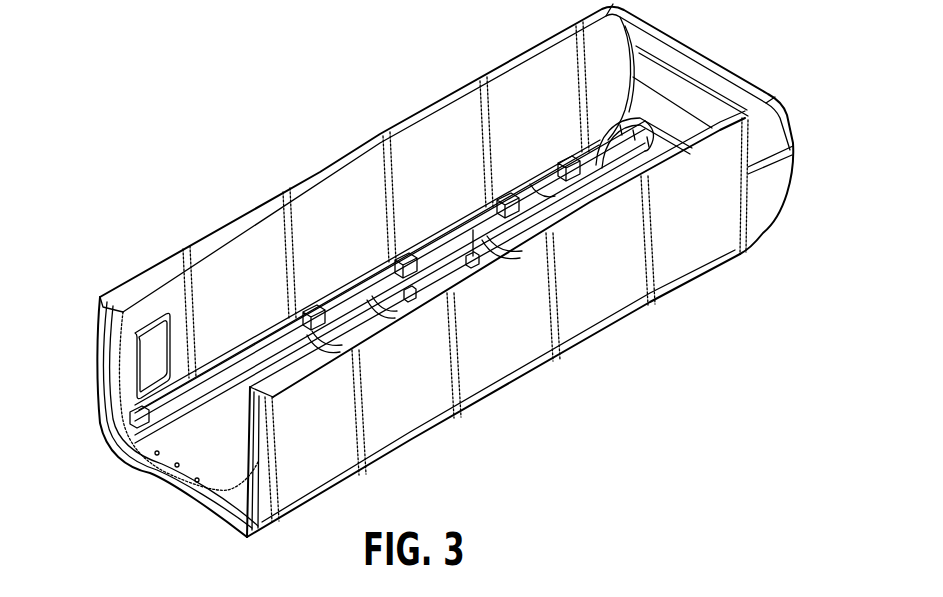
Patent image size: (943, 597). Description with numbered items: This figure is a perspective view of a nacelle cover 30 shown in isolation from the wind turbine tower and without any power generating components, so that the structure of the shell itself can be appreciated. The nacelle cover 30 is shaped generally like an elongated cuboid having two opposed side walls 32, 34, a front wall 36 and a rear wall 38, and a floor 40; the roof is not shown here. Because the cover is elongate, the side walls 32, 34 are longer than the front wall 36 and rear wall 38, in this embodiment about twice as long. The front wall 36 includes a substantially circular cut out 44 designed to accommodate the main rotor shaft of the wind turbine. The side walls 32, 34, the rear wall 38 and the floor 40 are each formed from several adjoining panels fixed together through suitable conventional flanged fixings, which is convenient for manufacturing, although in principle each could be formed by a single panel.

The nacelle cover 30 is at (224, 157).
The side wall 32 is at (204, 236).
The side wall 34 is at (505, 358).
The front wall 36 is at (226, 514).
The rear wall 38 is at (704, 50).
The floor 40 is at (193, 440).
The circular cut out 44 is at (108, 363).